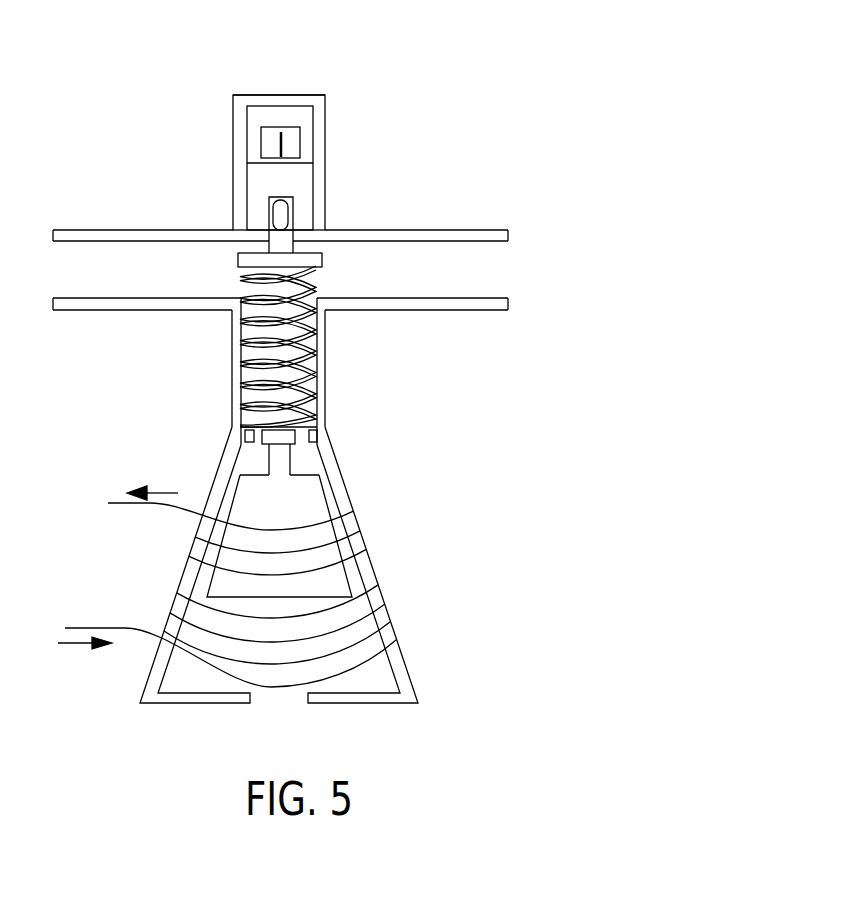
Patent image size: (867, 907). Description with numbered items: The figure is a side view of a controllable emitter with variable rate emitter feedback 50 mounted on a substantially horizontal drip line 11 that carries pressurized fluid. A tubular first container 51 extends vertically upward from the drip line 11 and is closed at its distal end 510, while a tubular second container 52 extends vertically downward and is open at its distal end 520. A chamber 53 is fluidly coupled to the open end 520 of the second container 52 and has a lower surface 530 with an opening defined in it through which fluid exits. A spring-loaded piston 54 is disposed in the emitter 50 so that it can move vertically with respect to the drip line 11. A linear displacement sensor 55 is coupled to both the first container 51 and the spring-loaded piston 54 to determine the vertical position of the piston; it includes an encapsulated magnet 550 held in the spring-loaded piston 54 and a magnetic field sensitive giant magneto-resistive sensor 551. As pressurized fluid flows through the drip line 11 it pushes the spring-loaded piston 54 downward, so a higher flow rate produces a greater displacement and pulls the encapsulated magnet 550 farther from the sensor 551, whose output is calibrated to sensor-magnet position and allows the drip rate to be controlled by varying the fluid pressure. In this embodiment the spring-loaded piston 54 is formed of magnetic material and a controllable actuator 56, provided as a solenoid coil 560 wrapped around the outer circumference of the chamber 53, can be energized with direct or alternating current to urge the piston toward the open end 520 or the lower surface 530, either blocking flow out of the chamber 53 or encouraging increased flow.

The drip line 11 is at (490, 238).
The controllable emitter with variable rate emitter feedback (CEVREF) 50 is at (296, 143).
The first container 51 is at (233, 137).
The distal end 510 is at (258, 95).
The linear displacement sensor 55 is at (339, 174).
The giant magneto-resistive (GMR) sensor 551 is at (300, 137).
The encapsulated magnet 550 is at (321, 216).
The spring-loaded piston 54 is at (323, 262).
The second container 52 is at (233, 373).
The open end 520 is at (310, 437).
The chamber 53 is at (335, 565).
The lower surface 530 is at (375, 702).
The solenoid coil 560 is at (195, 570).
The controllable actuator 56 is at (77, 627).